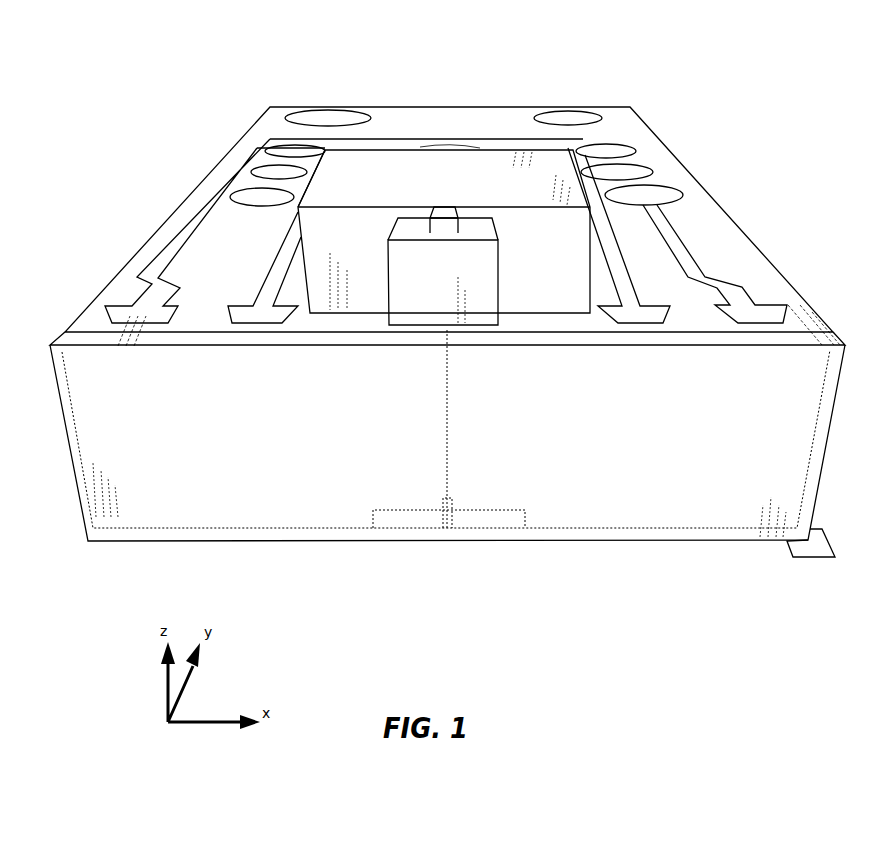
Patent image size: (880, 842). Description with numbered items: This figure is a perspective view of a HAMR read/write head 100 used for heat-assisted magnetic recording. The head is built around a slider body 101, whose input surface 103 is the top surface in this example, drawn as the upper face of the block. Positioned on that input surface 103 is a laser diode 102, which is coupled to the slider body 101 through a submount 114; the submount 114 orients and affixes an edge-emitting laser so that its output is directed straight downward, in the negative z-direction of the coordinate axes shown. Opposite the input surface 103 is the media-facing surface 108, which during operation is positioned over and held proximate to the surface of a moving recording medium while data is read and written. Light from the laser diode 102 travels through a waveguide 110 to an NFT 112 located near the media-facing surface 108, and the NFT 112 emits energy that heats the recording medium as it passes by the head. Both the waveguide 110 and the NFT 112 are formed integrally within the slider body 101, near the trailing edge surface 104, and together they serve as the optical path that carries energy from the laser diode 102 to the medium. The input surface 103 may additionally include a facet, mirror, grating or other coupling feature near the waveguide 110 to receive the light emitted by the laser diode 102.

The HAMR read/write head 100 is at (642, 47).
The slider body 101 is at (240, 135).
The laser diode 102 is at (500, 270).
The input surface 103 is at (117, 290).
The trailing edge surface 104 is at (150, 517).
The media-facing surface 108 is at (825, 557).
The waveguide 110 is at (447, 498).
The NFT 112 is at (412, 528).
The submount 114 is at (372, 163).